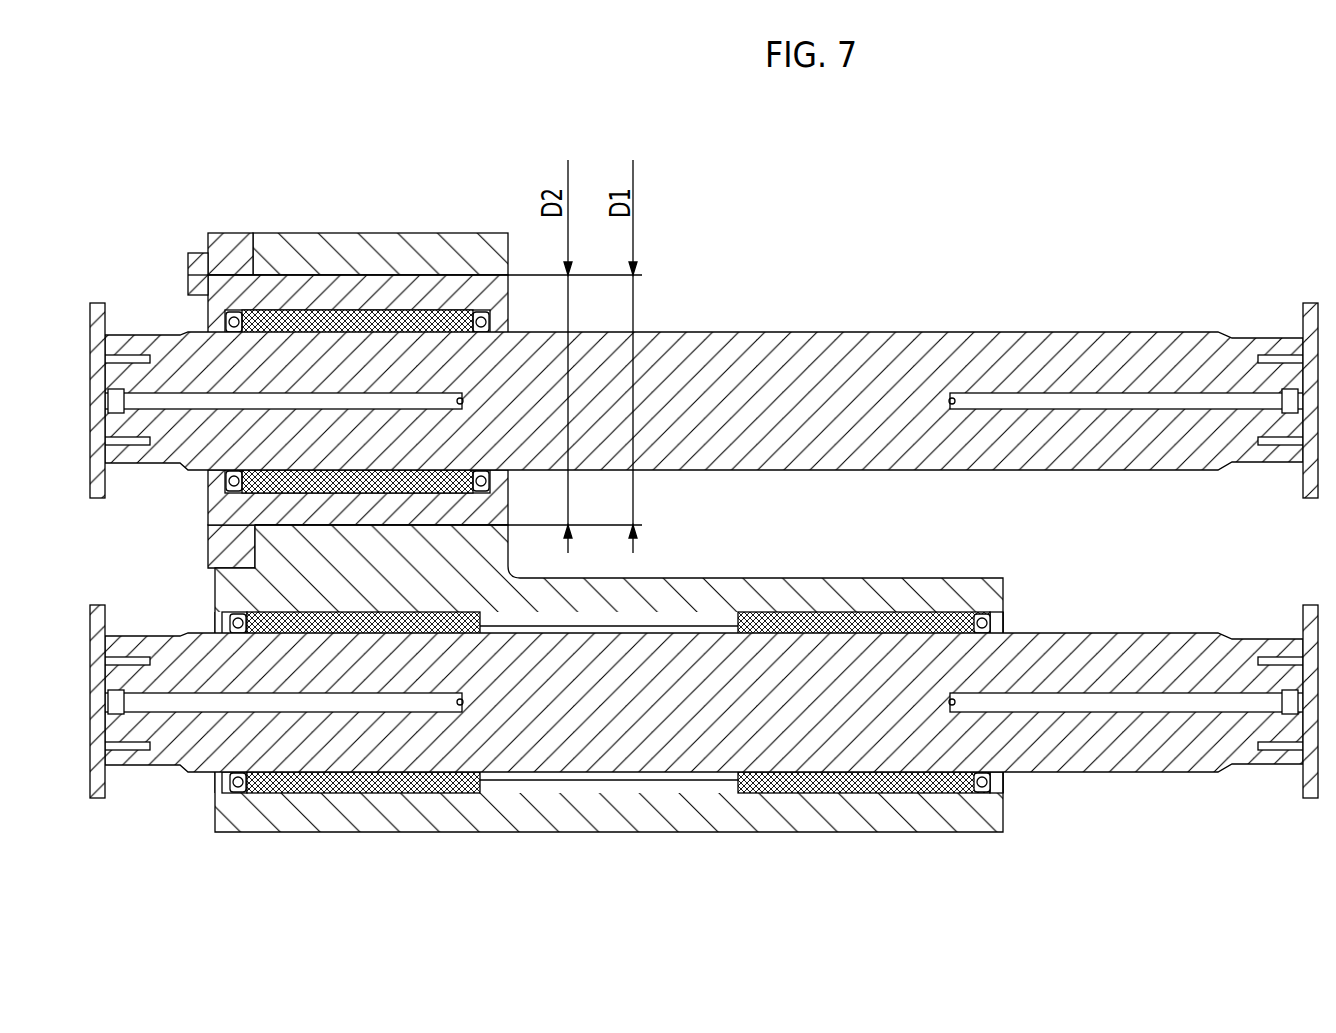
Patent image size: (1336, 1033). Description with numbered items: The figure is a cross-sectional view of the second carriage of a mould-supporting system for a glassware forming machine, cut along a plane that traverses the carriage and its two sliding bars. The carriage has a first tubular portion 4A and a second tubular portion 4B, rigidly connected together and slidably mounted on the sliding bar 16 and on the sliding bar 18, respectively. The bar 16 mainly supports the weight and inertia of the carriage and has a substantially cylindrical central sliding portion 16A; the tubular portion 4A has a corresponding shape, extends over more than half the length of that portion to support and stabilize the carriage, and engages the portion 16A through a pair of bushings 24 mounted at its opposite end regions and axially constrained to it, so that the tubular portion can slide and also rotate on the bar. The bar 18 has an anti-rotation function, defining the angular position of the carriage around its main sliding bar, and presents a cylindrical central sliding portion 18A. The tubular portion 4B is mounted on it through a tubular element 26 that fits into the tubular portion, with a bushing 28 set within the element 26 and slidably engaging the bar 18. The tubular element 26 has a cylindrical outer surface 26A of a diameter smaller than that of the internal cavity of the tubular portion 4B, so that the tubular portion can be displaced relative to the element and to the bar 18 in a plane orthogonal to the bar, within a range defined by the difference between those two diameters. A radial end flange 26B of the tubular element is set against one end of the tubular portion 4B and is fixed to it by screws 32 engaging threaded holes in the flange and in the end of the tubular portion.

The first tubular portion 4A is at (609, 707).
The second tubular portion 4B is at (349, 349).
The sliding bar 16 is at (704, 700).
The central sliding portion 16A is at (1118, 633).
The sliding bar 18 is at (704, 396).
The central sliding portion 18A is at (852, 345).
The bushings 24 is at (400, 795).
The tubular element 26 is at (456, 300).
The cylindrical outer surface 26A is at (317, 273).
The radial end flange 26B is at (228, 233).
The bushing 28 is at (372, 312).
The screws 32 is at (193, 272).